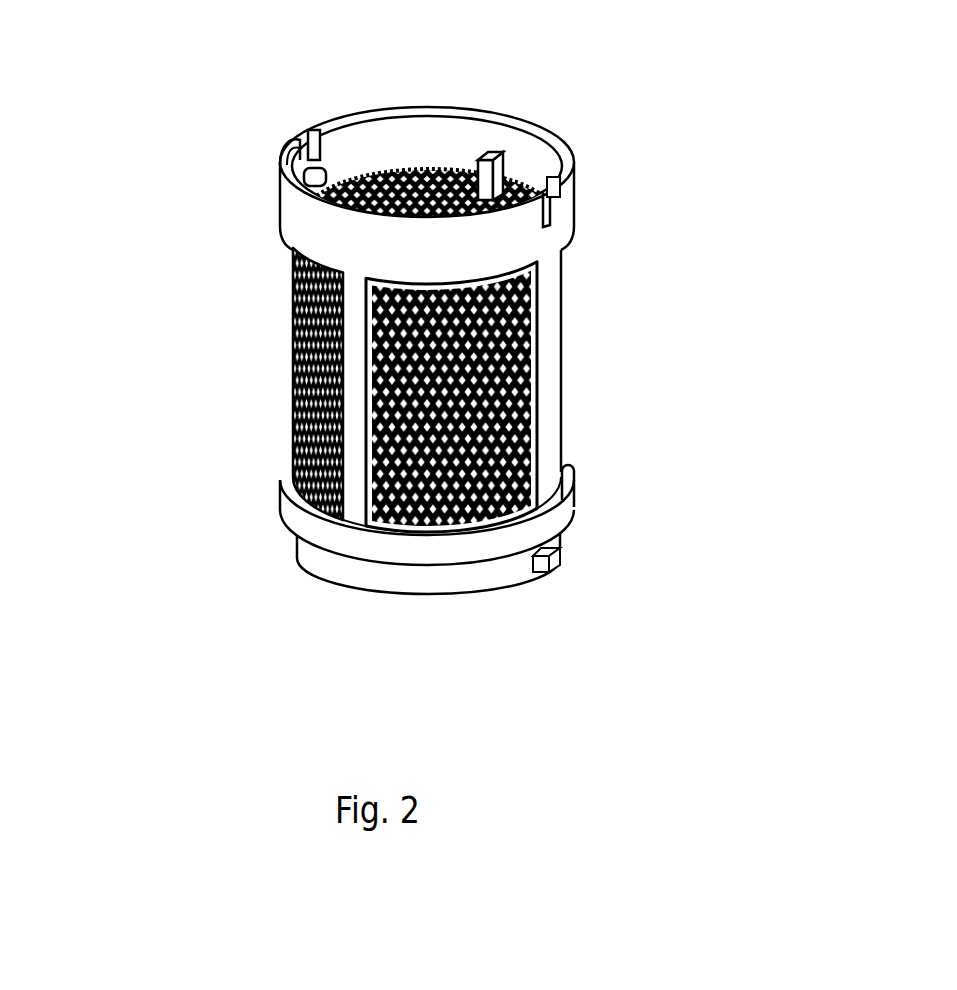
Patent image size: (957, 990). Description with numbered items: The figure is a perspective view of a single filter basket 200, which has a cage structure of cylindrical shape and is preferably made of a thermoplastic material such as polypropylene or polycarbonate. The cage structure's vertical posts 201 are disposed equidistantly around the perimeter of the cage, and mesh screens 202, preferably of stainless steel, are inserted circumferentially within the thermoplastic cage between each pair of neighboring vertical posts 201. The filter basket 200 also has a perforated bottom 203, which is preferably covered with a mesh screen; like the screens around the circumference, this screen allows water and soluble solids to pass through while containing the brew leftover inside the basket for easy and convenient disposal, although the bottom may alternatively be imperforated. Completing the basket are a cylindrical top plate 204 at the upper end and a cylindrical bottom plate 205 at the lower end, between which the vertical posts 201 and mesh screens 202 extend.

The filter basket 200 is at (605, 135).
The vertical posts 201 is at (353, 375).
The mesh screens 202 is at (485, 442).
The perforated bottom 203 is at (517, 587).
The cylindrical top plate 204 is at (303, 210).
The cylindrical bottom plate 205 is at (303, 543).